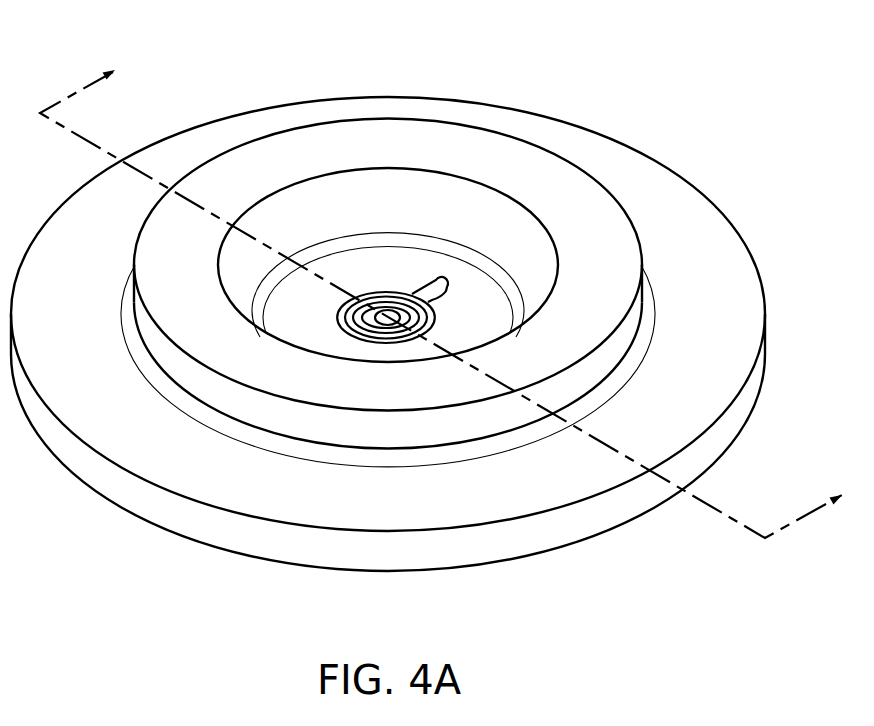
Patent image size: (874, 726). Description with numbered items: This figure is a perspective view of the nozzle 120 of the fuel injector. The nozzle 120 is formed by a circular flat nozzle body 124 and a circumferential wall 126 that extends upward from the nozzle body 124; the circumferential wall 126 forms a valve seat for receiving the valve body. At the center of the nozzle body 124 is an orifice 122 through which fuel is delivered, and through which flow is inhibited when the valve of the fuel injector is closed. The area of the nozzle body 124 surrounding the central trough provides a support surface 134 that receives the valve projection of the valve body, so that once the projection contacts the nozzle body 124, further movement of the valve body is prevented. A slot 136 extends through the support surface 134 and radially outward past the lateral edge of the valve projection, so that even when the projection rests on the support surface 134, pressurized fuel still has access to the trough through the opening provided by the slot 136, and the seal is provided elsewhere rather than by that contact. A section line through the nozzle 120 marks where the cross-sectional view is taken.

The nozzle 120 is at (512, 77).
The orifice 122 is at (380, 298).
The nozzle body 124 is at (680, 213).
The circumferential wall 126 is at (557, 183).
The support surface 134 is at (345, 263).
The slot 136 is at (418, 295).